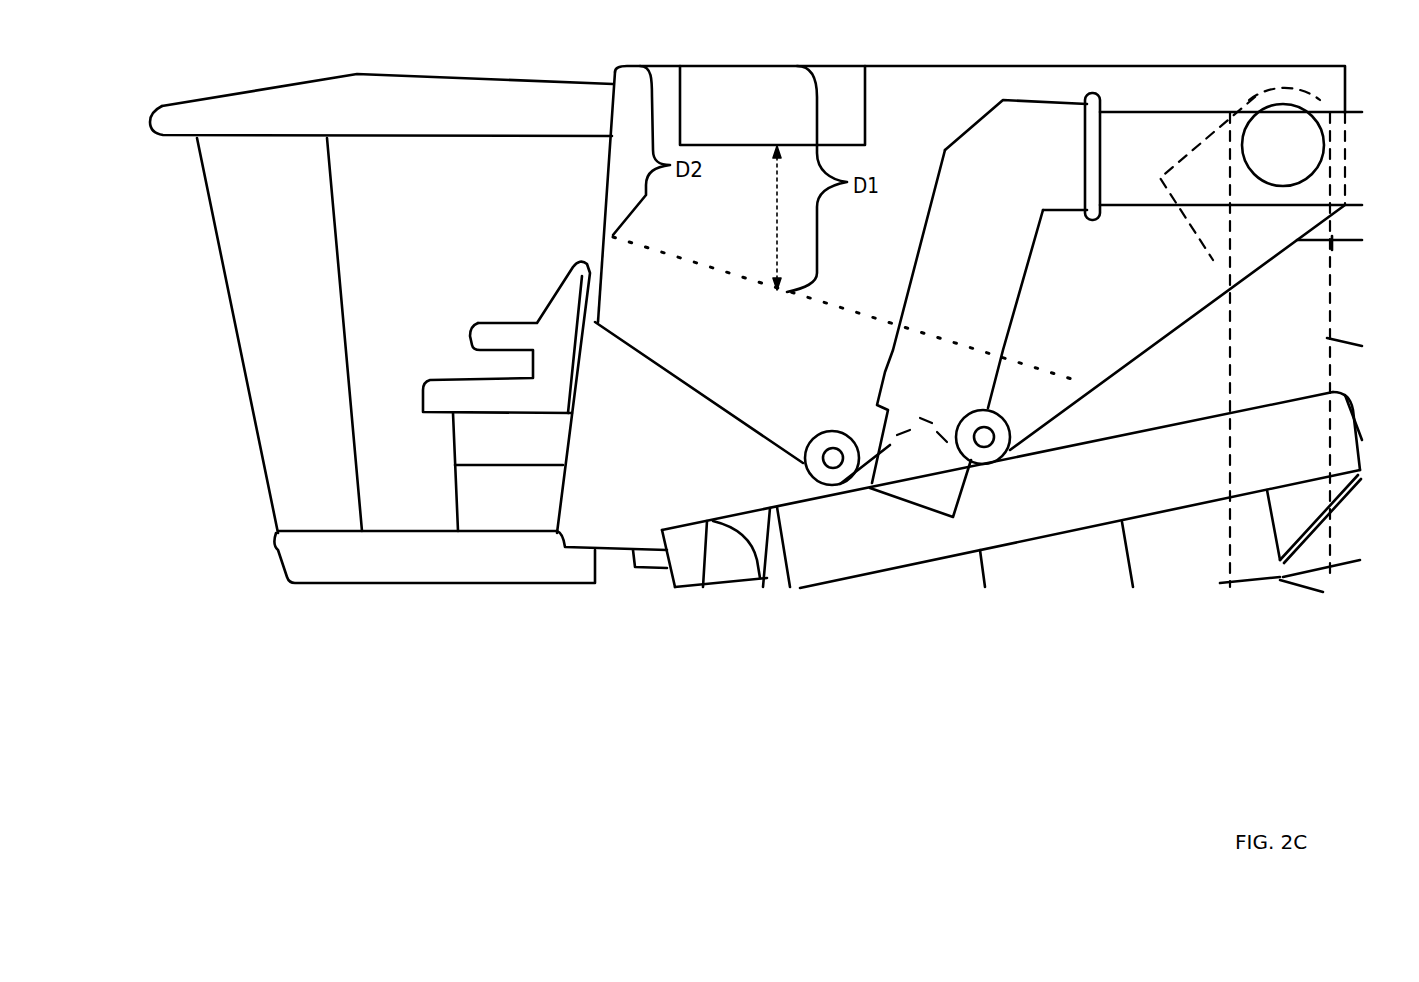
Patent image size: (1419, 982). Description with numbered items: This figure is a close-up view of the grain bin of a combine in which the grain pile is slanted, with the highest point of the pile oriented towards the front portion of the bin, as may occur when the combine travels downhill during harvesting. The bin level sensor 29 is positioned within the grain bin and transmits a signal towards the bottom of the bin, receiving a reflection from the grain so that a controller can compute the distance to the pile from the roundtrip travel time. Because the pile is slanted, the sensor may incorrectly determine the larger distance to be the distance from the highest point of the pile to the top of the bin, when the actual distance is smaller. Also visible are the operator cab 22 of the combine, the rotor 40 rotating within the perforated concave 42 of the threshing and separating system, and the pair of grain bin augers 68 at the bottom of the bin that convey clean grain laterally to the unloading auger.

The operator cab 22 is at (225, 286).
The bin level sensor 29 is at (813, 66).
The rotor 40 is at (723, 547).
The concave 42 is at (1113, 497).
The grain bin augers 68 is at (832, 430).